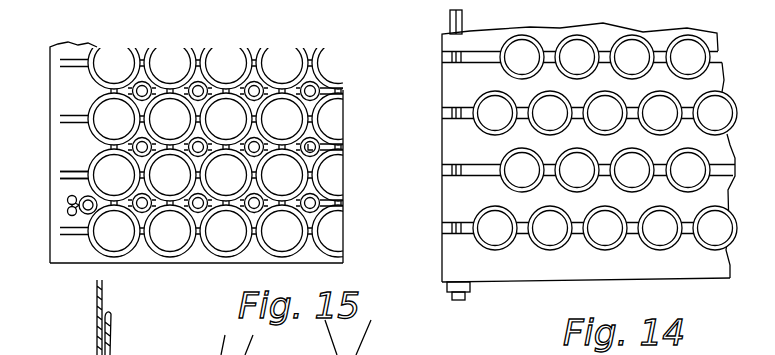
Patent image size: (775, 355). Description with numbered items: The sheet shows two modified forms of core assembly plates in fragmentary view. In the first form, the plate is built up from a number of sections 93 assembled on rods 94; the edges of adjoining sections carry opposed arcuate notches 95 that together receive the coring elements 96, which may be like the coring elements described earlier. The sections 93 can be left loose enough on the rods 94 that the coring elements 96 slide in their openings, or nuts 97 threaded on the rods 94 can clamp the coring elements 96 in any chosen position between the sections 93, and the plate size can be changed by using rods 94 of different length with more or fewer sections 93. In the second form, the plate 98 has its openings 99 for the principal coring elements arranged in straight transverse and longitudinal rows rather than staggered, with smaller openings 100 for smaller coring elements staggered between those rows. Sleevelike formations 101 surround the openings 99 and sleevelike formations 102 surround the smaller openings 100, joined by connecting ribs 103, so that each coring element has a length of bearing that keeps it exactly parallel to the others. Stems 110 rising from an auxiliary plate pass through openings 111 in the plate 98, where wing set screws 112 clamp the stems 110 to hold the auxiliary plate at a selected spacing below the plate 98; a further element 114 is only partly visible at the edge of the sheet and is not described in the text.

In FIG. 14, the plate sections 93 is at (453, 250).
In FIG. 14, the rods 94 is at (450, 22).
In FIG. 14, the arcuate notches 95 is at (605, 278).
In FIG. 14, the coring elements 96 is at (605, 228).
In FIG. 14, the nuts 97 is at (468, 292).
In FIG. 15, the plate 98 is at (80, 258).
In FIG. 15, the openings 99 is at (168, 250).
In FIG. 15, the smaller openings 100 is at (327, 139).
In FIG. 15, the sleevelike formations 101 is at (107, 257).
In FIG. 15, the sleevelike formations 102 is at (322, 161).
In FIG. 15, the connecting ribs 103 is at (216, 238).
In FIG. 15, the stems 110 is at (82, 213).
In FIG. 15, the openings 111 is at (84, 195).
In FIG. 15, the wing set screws 112 is at (68, 205).
In FIG. 15, the rod 114 is at (147, 317).